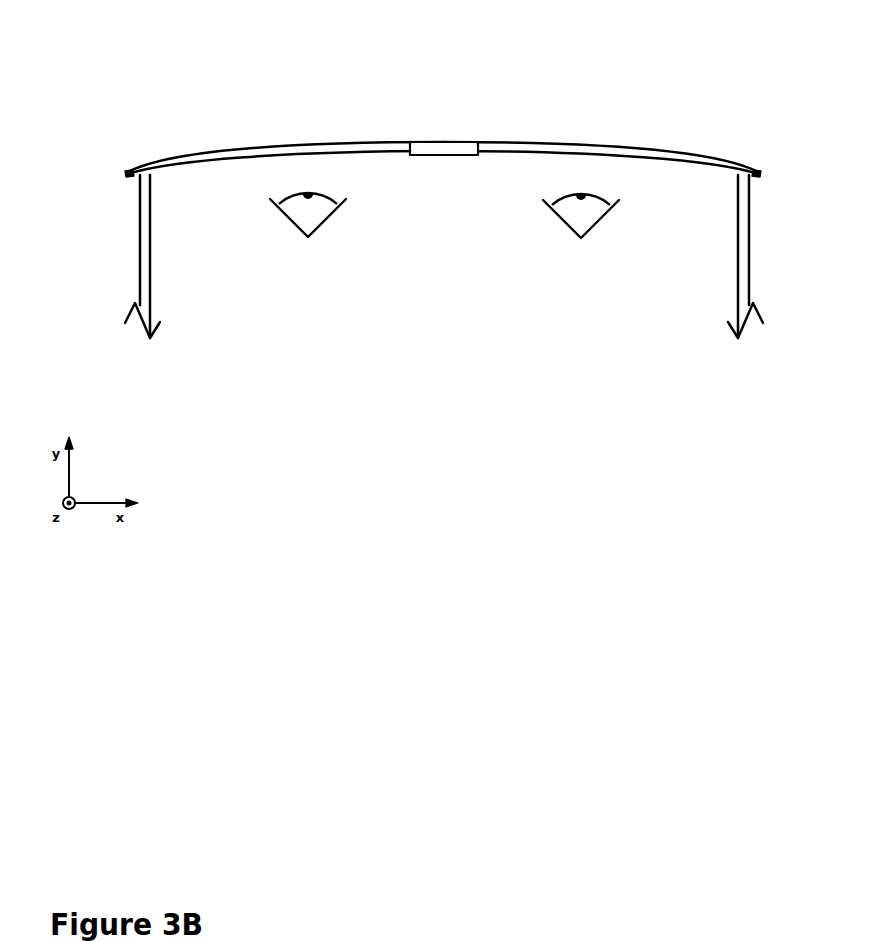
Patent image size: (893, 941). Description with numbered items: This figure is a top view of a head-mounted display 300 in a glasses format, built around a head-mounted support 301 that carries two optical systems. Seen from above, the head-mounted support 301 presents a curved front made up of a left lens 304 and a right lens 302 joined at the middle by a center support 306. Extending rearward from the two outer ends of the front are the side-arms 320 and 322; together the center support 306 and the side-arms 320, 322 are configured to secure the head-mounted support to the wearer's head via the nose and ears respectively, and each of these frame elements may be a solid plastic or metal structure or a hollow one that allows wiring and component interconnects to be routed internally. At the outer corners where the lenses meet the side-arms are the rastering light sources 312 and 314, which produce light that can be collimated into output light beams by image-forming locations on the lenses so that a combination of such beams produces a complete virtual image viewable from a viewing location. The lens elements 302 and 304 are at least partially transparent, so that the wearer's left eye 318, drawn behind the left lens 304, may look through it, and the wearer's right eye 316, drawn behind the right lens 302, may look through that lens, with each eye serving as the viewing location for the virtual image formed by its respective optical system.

The head-mounted display 300 is at (444, 340).
The head-mounted support 301 is at (393, 78).
The right lens 302 is at (661, 150).
The left lens 304 is at (234, 148).
The center support 306 is at (428, 142).
The rastering light source 312 is at (759, 158).
The rastering light source 314 is at (130, 170).
The right eye 316 is at (597, 231).
The left eye 318 is at (323, 226).
The side-arm 320 is at (750, 271).
The side-arm 322 is at (138, 257).